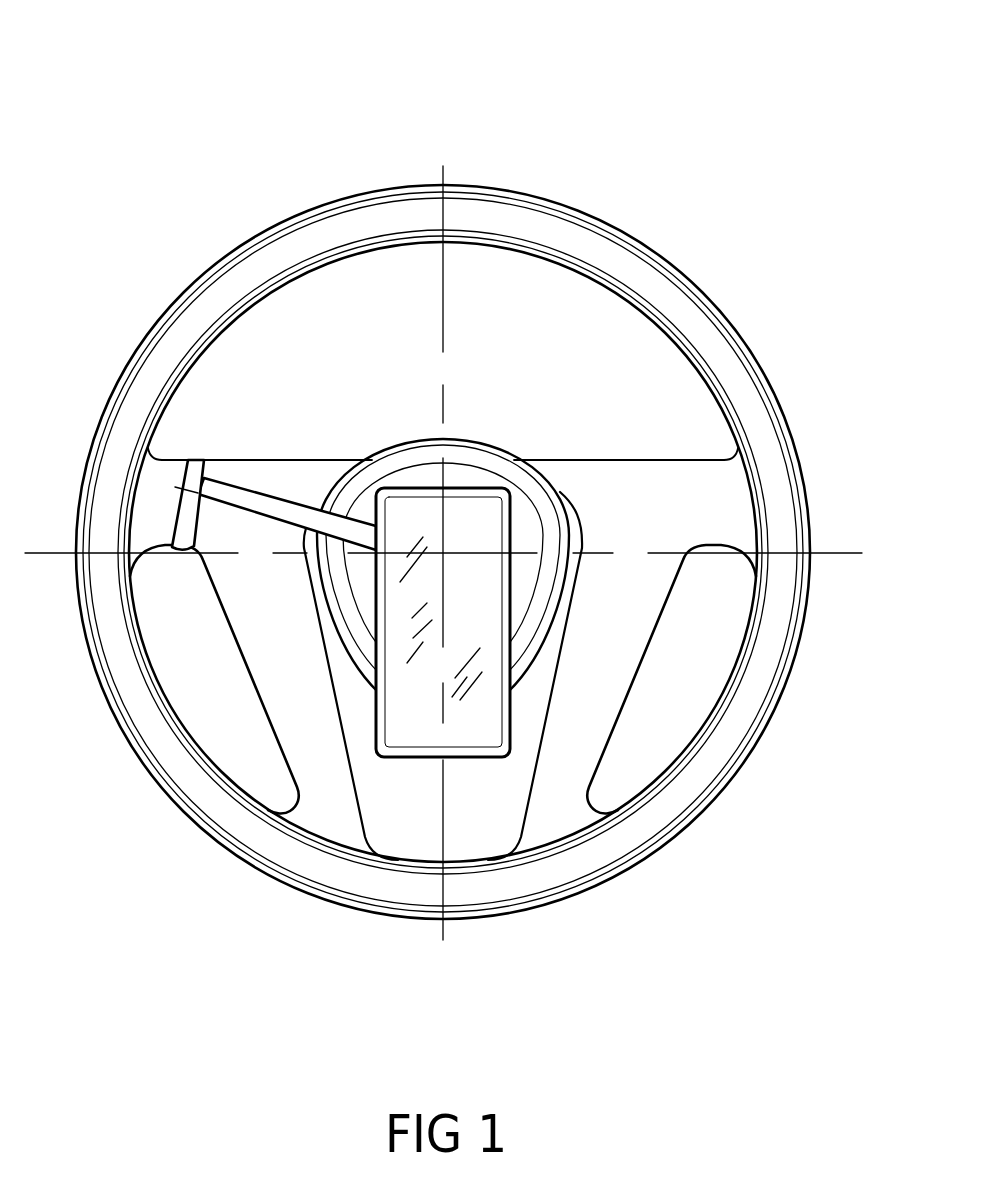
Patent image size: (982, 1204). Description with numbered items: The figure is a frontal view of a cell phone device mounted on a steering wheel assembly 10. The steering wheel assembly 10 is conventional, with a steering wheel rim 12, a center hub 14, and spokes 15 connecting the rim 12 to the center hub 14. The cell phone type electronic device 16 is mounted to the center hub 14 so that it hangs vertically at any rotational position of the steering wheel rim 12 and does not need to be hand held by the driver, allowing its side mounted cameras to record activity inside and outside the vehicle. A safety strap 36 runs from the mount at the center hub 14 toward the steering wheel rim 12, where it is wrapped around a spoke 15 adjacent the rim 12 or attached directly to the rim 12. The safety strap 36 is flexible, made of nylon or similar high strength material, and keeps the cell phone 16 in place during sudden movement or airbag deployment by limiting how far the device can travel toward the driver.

The steering wheel assembly 10 is at (443, 474).
The steering wheel rim 12 is at (603, 252).
The center hub 14 is at (523, 520).
The spokes 15 is at (306, 472).
The cell phone type electronic device 16 is at (457, 520).
The safety strap 36 is at (253, 505).